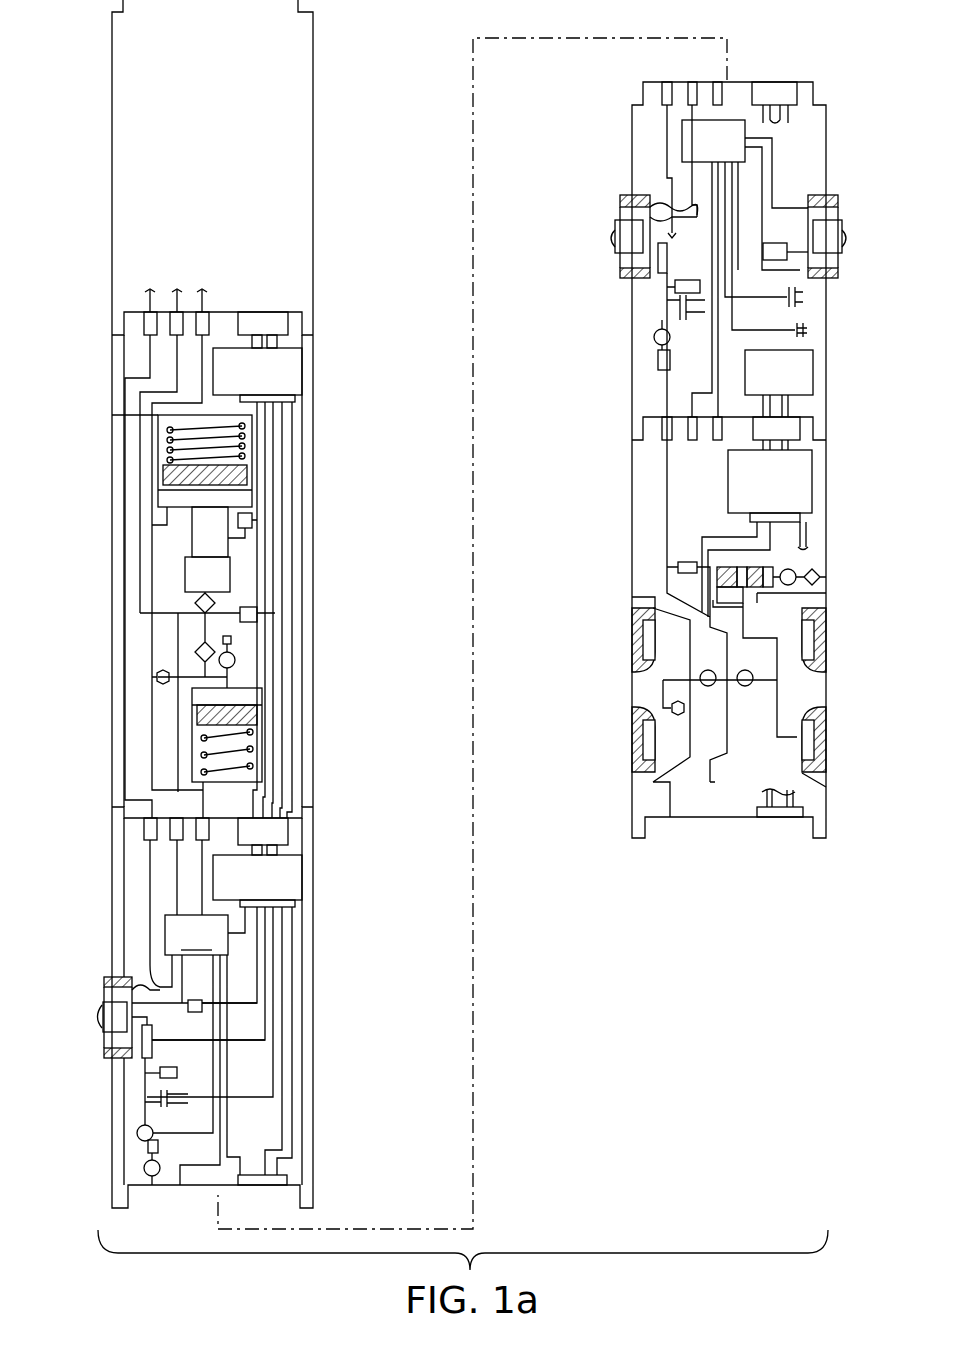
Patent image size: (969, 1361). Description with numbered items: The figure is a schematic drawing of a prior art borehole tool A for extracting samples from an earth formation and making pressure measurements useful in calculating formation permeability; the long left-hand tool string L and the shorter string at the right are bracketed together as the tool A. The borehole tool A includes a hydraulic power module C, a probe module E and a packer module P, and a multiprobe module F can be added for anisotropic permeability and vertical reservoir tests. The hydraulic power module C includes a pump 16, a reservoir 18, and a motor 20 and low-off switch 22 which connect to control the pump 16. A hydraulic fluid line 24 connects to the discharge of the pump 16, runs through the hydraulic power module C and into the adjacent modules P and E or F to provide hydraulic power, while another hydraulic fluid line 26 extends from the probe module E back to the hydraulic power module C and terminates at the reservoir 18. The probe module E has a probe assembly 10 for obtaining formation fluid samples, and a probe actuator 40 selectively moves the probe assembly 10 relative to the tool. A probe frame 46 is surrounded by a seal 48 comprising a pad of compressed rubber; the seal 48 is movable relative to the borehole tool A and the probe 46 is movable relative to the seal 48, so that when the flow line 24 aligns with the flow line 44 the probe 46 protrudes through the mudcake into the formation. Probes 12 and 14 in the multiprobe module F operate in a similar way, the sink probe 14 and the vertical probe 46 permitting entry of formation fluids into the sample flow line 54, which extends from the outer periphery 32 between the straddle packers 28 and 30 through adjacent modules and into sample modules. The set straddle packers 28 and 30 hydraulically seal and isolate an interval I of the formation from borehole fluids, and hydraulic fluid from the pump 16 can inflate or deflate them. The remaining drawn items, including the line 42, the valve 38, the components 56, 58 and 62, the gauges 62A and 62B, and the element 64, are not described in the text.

The logging tool string L is at (110, 158).
The multiprobe module F is at (817, 78).
The hydraulic power module C is at (110, 560).
The probe module E is at (110, 875).
The packer module P is at (830, 830).
The borehole tool A is at (749, 952).
The isolation pad I is at (827, 712).
The probe assembly 10 is at (84, 977).
The probe 12 is at (838, 300).
The sink probe 14 is at (617, 195).
The pump 16 is at (215, 560).
The reservoir 18 is at (255, 458).
The motor 20 is at (212, 540).
The low-off switch 22 is at (253, 526).
The hydraulic fluid line 24 is at (176, 650).
The hydraulic fluid line 26 is at (152, 745).
The straddle packer 28 is at (630, 610).
The straddle packer 30 is at (630, 776).
The outer periphery 32 is at (632, 710).
The pressure valve 38 is at (782, 697).
The probe actuator 40 is at (205, 931).
The connecting line 42 is at (142, 985).
The flow line 44 is at (105, 1000).
The probe frame 46 is at (93, 1017).
The seal 48 is at (140, 1052).
The sample flow line 54 is at (664, 580).
The pressure sensor 56 is at (158, 1073).
The valve 58 is at (178, 1073).
The pressure gauge 62 is at (138, 1140).
The pressure gauge 62A is at (708, 686).
The pressure gauge 62B is at (745, 686).
The probe 64 is at (630, 679).